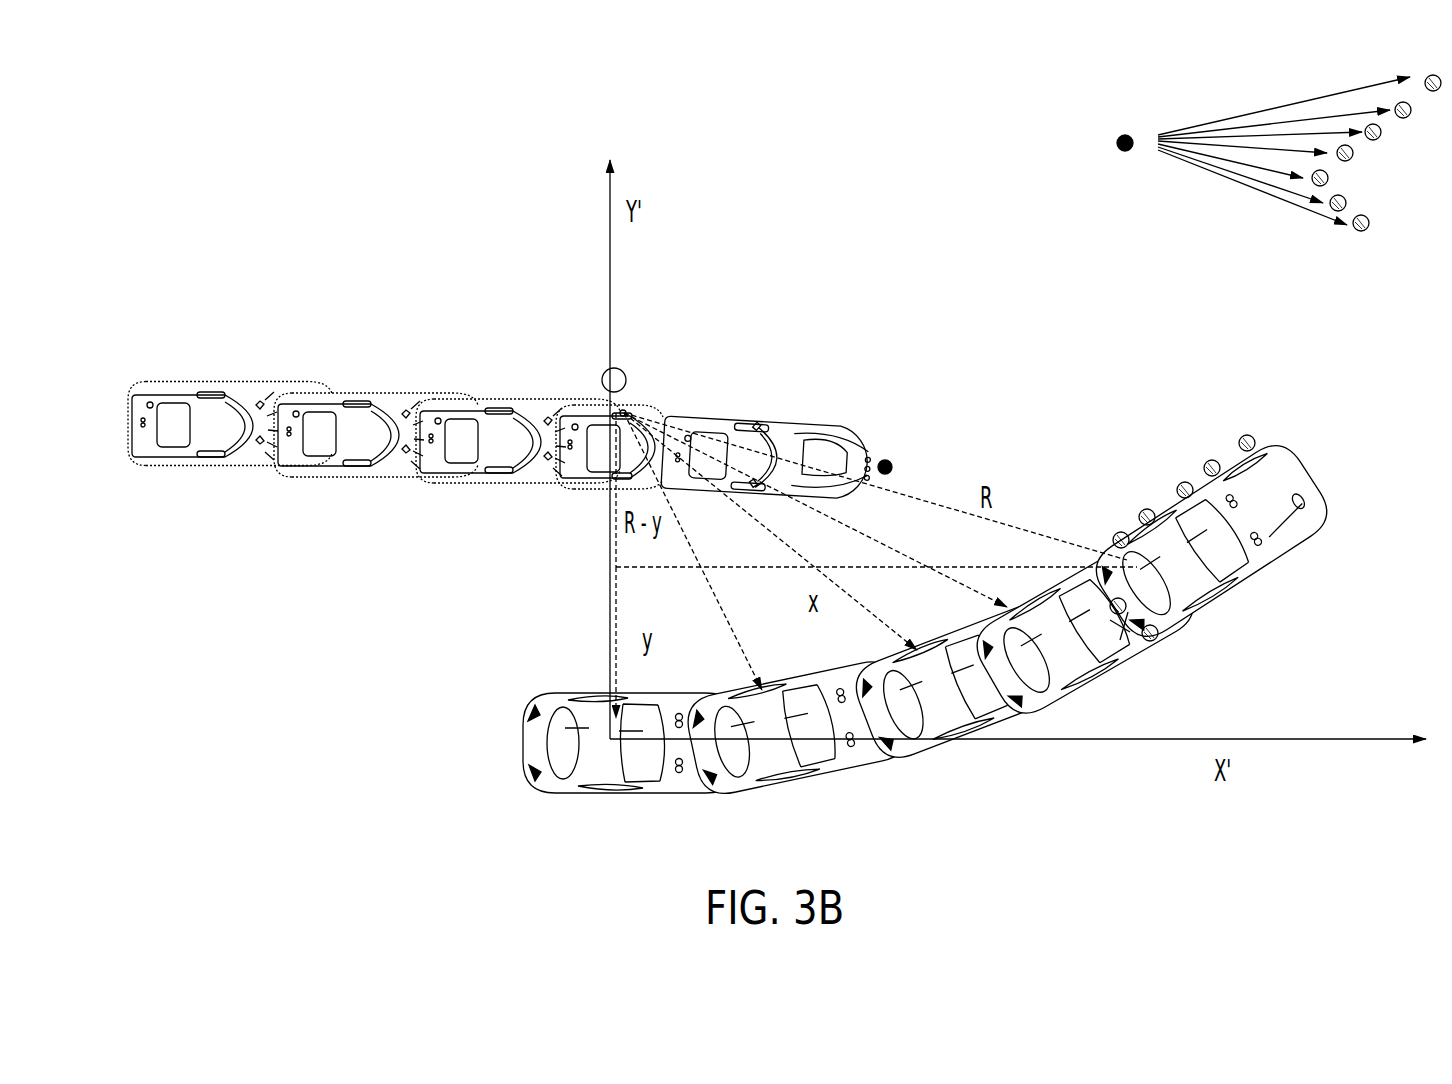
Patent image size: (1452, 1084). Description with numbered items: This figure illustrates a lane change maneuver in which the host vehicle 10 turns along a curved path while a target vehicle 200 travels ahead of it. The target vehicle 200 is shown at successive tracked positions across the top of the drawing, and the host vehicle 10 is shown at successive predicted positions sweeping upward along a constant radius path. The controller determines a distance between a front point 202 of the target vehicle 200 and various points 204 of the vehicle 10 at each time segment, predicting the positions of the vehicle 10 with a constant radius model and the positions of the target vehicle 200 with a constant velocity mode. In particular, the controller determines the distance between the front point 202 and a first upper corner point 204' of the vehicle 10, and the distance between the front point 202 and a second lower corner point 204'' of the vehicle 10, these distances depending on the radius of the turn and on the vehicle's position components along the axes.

The target vehicle 200 is at (783, 418).
The front point 202 is at (890, 458).
The points of the vehicle 204 is at (1166, 493).
The first upper corner point 204' is at (1236, 408).
The second lower corner point 204'' is at (1150, 652).
The vehicle 10 is at (1283, 462).